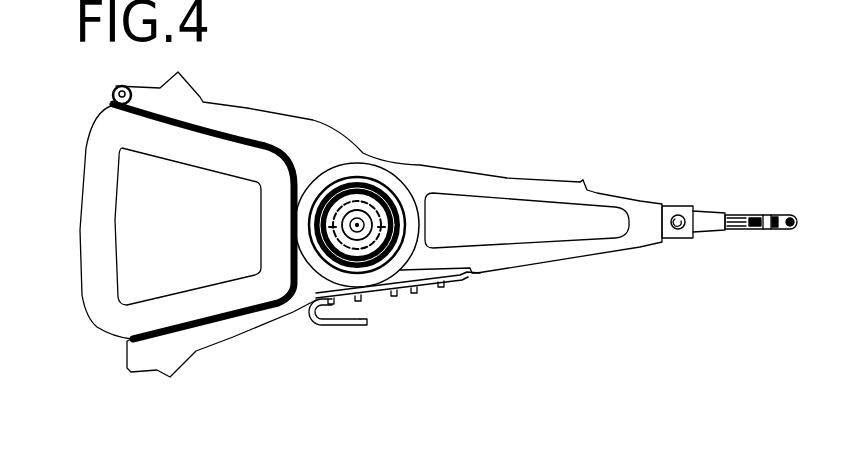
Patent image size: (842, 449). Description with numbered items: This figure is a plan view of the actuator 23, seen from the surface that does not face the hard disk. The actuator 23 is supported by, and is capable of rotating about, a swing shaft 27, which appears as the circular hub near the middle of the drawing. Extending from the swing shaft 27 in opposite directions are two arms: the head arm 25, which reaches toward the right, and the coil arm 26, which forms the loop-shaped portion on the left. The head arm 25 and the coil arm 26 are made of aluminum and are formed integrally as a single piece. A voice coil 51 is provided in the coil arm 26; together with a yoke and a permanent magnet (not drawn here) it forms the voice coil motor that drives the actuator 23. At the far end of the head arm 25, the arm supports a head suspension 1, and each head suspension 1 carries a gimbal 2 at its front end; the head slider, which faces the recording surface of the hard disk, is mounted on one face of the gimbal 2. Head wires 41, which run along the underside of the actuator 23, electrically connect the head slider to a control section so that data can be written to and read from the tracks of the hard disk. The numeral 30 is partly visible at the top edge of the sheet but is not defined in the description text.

The head suspension 1 is at (750, 210).
The gimbal 2 is at (789, 210).
The actuator 23 is at (478, 162).
The head arm 25 is at (551, 189).
The coil arm 26 is at (238, 332).
The swing shaft 27 is at (357, 195).
The housing bump 30 is at (516, 91).
The head wires 41 is at (425, 290).
The voice coil 51 is at (85, 230).